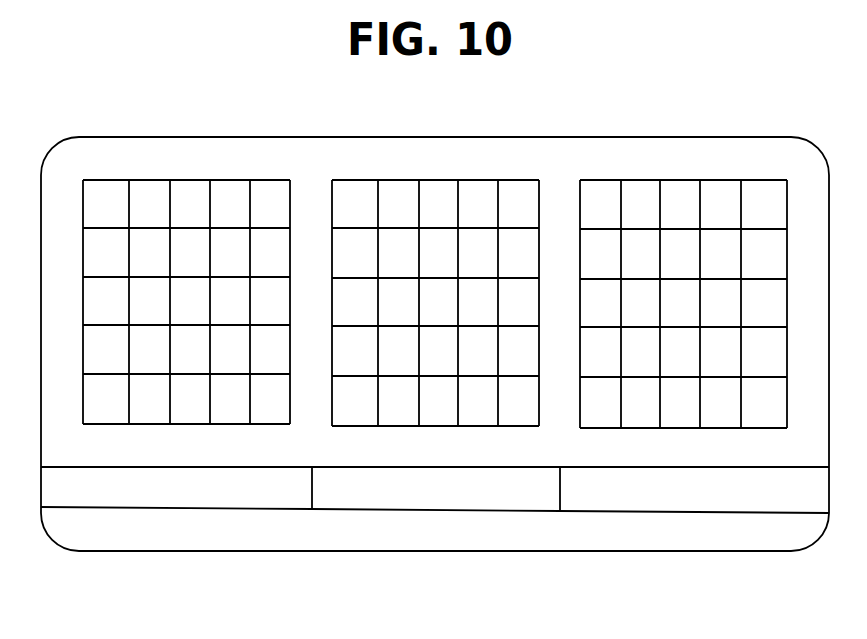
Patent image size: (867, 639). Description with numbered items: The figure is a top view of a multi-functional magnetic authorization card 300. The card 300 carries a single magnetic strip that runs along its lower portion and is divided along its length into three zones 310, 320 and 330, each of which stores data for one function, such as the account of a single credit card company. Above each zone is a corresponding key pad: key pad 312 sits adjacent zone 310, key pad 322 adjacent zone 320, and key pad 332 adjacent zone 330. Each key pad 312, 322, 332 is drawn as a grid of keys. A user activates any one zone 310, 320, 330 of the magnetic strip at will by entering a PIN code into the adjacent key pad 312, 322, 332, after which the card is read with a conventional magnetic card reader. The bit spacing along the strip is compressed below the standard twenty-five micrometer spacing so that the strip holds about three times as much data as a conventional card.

The multi-functional magnetic card 300 is at (774, 124).
The zone 310 is at (150, 507).
The zone 320 is at (435, 510).
The zone 330 is at (692, 512).
The key pad 312 is at (115, 180).
The key pad 322 is at (363, 180).
The key pad 332 is at (613, 180).